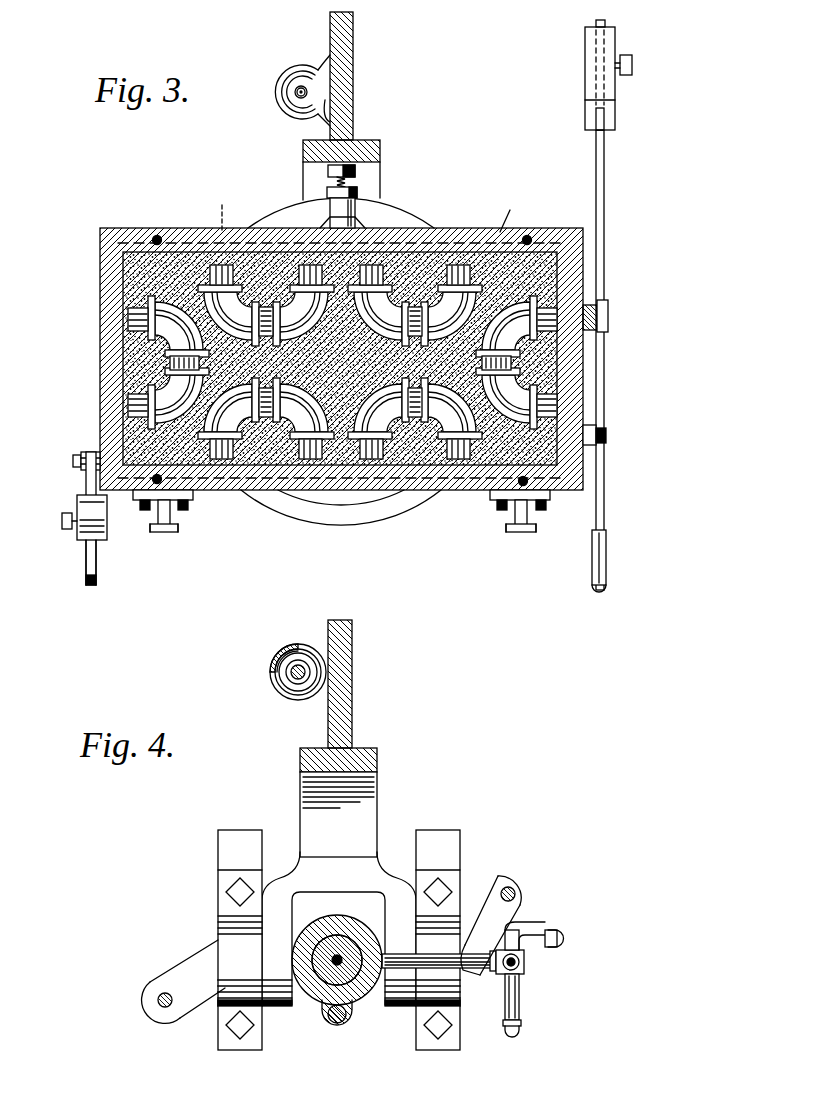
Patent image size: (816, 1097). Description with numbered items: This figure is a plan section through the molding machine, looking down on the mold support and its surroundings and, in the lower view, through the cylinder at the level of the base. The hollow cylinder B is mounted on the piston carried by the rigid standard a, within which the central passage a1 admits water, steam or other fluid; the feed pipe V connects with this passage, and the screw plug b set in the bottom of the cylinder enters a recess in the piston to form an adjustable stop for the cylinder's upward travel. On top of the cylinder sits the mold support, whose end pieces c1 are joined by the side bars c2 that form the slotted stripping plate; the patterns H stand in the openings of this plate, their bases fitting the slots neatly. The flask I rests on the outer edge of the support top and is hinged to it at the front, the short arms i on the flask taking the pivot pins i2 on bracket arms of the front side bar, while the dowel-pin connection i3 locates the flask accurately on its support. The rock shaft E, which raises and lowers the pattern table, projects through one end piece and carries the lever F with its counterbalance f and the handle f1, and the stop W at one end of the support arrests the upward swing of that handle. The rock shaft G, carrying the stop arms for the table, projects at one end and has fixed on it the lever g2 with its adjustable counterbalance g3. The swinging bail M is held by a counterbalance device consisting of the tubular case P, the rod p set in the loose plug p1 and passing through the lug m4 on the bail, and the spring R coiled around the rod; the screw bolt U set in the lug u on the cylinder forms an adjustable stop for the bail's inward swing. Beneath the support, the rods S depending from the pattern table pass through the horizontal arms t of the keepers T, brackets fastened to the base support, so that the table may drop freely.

In FIG. 3, the end piece c1 is at (100, 268).
In FIG. 3, the side bar c2 is at (223, 204).
In FIG. 3, the pattern H is at (238, 350).
In FIG. 3, the hollow cylinder B is at (432, 222).
In FIG. 3, the bail M is at (380, 152).
In FIG. 4, the bail M is at (352, 715).
In FIG. 3, the tubular case P is at (300, 90).
In FIG. 4, the tubular case P is at (283, 658).
In FIG. 3, the rod p is at (297, 95).
In FIG. 4, the rod p is at (292, 679).
In FIG. 3, the lug m4 is at (313, 112).
In FIG. 3, the screw bolt U is at (355, 171).
In FIG. 3, the lug u is at (345, 213).
In FIG. 3, the flask I is at (443, 520).
In FIG. 3, the dowel-pin connection i3 is at (527, 240).
In FIG. 3, the short arm i is at (163, 532).
In FIG. 3, the pivot pin i2 is at (510, 532).
In FIG. 3, the rock shaft G is at (73, 462).
In FIG. 3, the adjustable counterbalance g3 is at (77, 520).
In FIG. 3, the lever g2 is at (86, 562).
In FIG. 3, the lever F is at (604, 278).
In FIG. 3, the counterbalance f is at (612, 128).
In FIG. 3, the rock shaft E is at (608, 318).
In FIG. 3, the stop W is at (606, 440).
In FIG. 3, the handle f1 is at (606, 555).
In FIG. 4, the spring R is at (275, 668).
In FIG. 4, the loose plug p1 is at (292, 692).
In FIG. 4, the keeper T is at (244, 953).
In FIG. 4, the feed pipe V is at (470, 968).
In FIG. 4, the standard a is at (310, 1000).
In FIG. 4, the passage a1 is at (340, 958).
In FIG. 4, the screw plug b is at (337, 1025).
In FIG. 4, the horizontal arm t is at (332, 937).
In FIG. 4, the rod S is at (158, 1000).